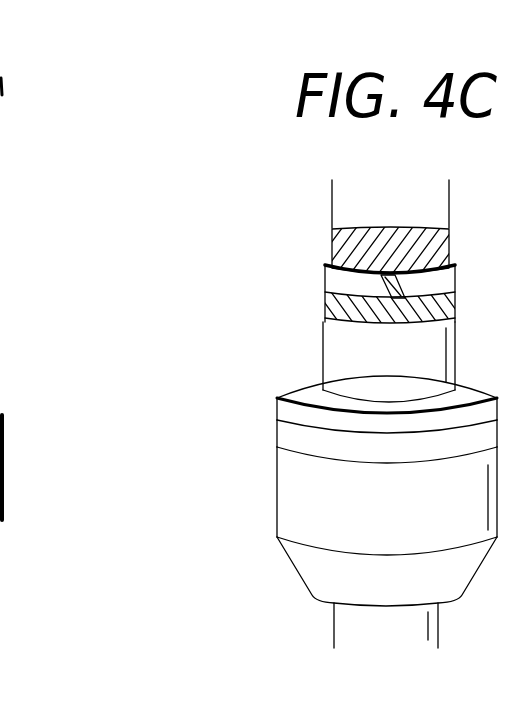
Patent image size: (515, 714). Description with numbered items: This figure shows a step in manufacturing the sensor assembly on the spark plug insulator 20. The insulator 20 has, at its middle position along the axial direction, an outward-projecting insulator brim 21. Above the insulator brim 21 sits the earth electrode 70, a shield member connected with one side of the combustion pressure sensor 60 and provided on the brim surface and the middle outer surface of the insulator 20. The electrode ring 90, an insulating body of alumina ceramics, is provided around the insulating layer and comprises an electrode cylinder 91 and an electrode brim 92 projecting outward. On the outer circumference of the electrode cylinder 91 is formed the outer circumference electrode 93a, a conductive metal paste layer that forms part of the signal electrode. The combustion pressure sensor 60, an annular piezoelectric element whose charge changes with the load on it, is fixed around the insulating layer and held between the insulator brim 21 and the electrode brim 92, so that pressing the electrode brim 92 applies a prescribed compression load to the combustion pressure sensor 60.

The earth electrode 70 is at (332, 243).
The outer circumference electrode 93a is at (325, 299).
The electrode ring 90 is at (309, 331).
The electrode cylinder 91 is at (330, 367).
The electrode brim 92 is at (282, 385).
The combustion pressure sensor 60 is at (292, 437).
The insulator brim 21 is at (295, 512).
The insulator 20 is at (323, 619).